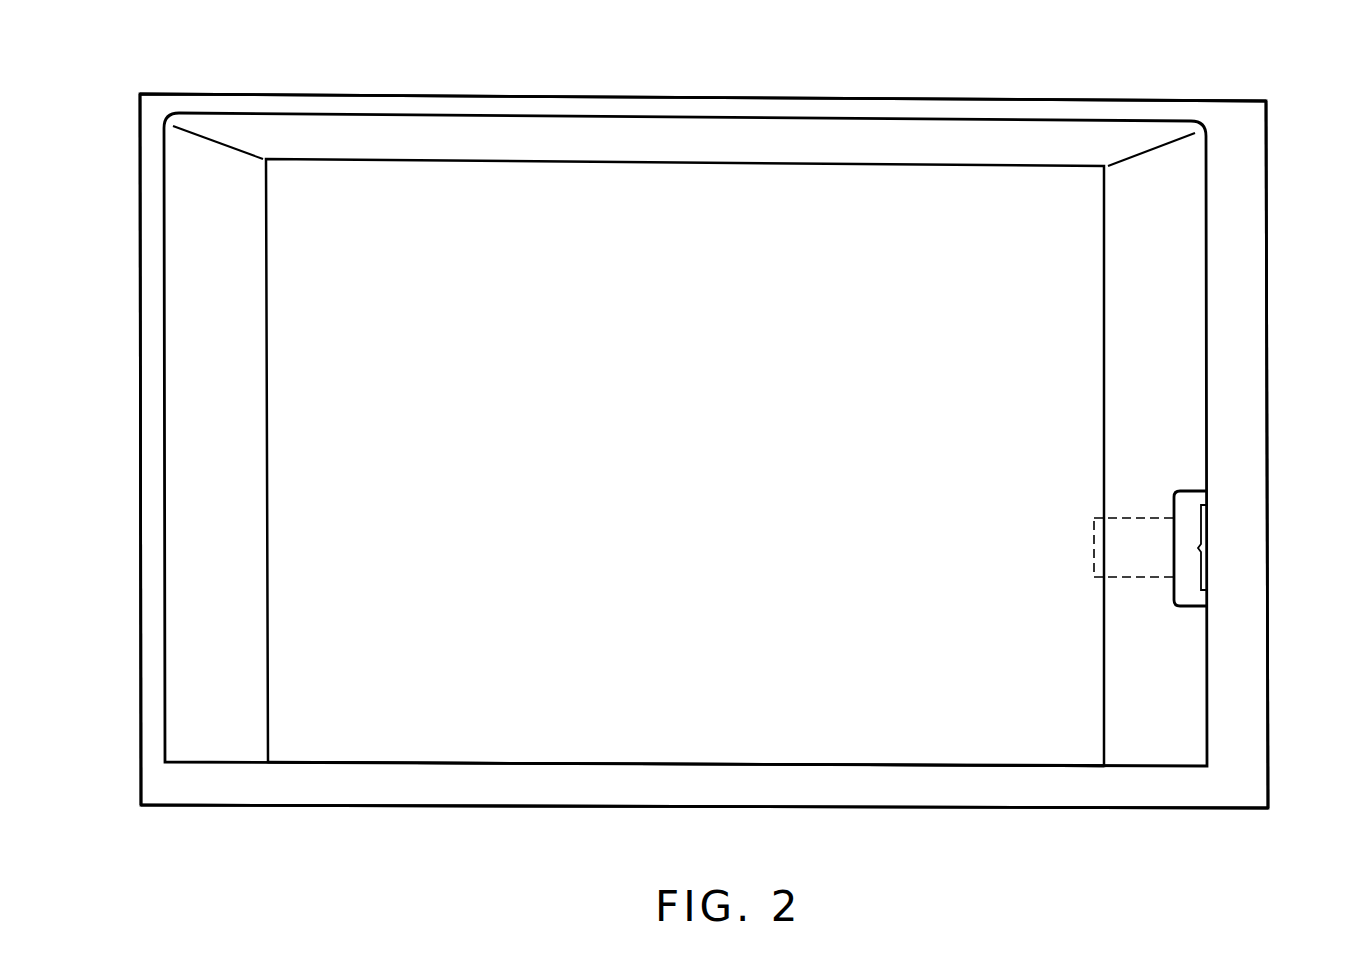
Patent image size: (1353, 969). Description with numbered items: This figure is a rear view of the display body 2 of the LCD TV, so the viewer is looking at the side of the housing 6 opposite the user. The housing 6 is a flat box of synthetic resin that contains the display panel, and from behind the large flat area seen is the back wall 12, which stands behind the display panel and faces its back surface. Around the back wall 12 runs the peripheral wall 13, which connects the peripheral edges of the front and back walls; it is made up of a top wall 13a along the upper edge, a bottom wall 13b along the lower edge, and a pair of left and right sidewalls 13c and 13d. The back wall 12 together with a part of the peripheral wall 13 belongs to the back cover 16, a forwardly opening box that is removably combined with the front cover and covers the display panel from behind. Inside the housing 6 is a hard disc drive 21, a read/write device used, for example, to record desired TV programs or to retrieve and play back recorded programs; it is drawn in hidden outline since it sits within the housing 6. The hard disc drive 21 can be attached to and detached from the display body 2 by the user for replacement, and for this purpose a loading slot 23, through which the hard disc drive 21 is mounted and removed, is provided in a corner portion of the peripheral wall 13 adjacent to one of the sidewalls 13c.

The display body 2 is at (1050, 97).
The housing 6 is at (908, 96).
The back wall 12 is at (673, 195).
The peripheral wall 13 is at (707, 454).
The top wall 13a is at (767, 97).
The bottom wall 13b is at (767, 808).
The sidewall 13c is at (1270, 447).
The sidewall 13d is at (140, 450).
The back cover 16 is at (505, 745).
The hard disc drive 21 is at (1133, 578).
The loading slot 23 is at (1207, 533).